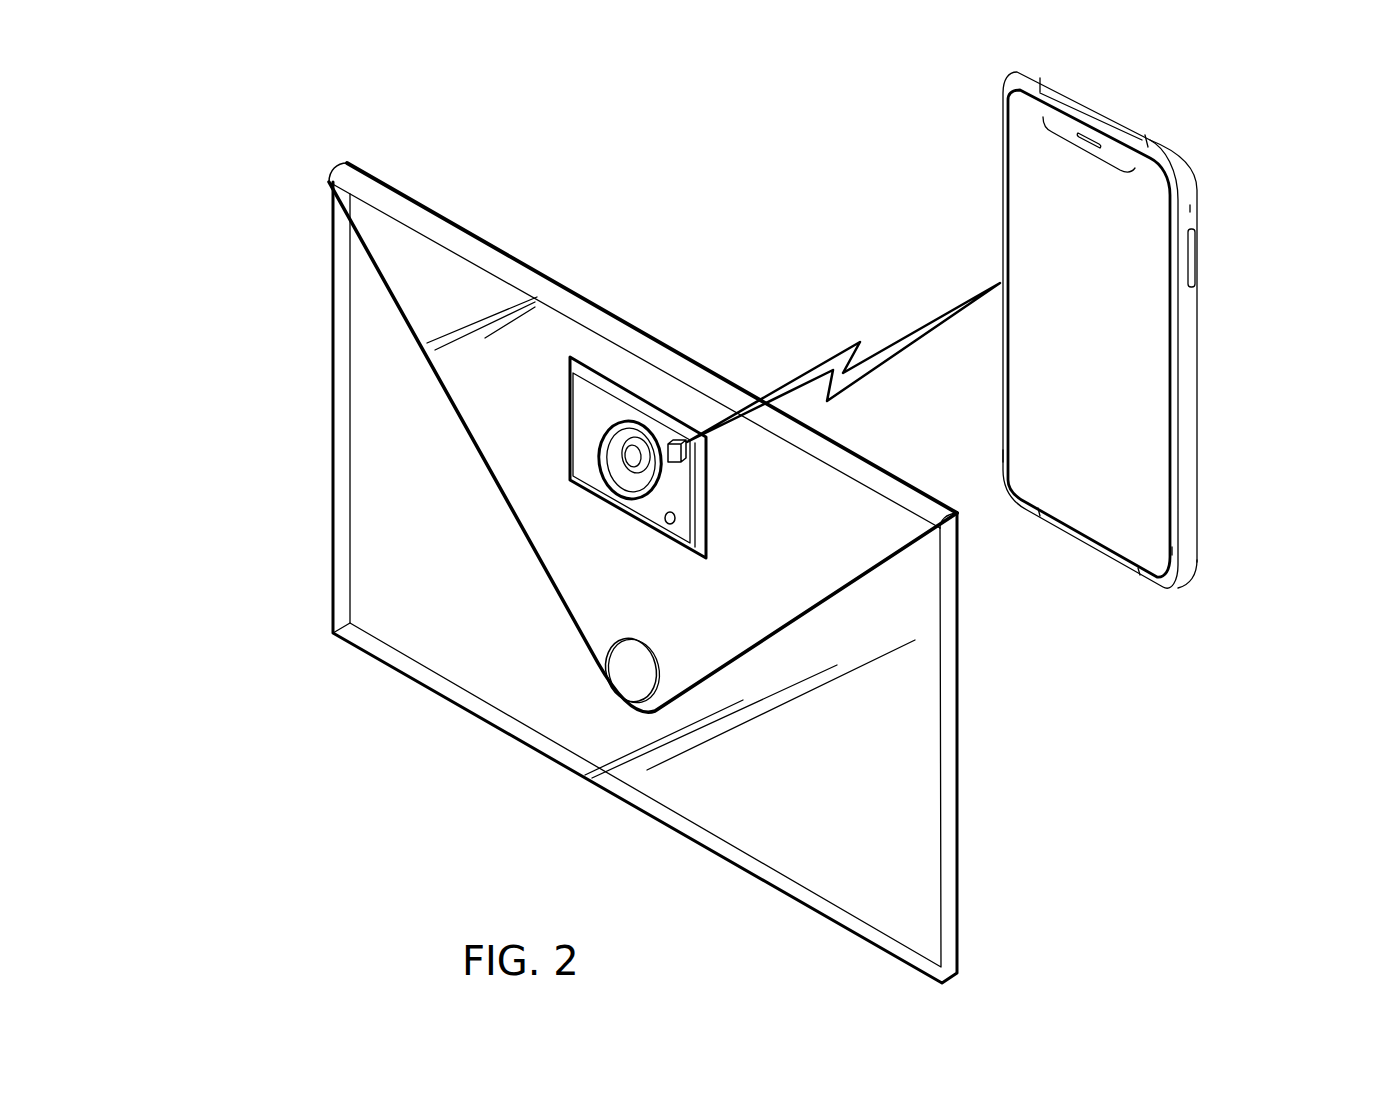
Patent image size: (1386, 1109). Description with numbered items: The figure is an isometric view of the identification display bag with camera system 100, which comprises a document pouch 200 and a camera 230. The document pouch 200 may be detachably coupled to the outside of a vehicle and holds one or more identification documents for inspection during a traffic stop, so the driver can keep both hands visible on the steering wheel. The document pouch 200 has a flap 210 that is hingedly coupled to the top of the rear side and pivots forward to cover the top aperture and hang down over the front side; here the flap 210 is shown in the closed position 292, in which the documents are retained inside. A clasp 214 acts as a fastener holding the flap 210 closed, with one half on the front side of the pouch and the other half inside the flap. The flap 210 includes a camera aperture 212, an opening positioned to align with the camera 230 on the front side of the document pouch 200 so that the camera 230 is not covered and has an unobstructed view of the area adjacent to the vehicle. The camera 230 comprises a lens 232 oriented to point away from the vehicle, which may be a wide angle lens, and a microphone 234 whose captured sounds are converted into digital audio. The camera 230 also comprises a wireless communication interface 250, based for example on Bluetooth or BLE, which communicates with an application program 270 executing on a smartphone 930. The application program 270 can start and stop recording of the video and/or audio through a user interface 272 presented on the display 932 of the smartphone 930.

The identification display bag with camera system 100 is at (218, 163).
The document pouch 200 is at (398, 488).
The flap 210 is at (433, 323).
The camera aperture 212 is at (705, 497).
The clasp 214 is at (630, 673).
The camera 230 is at (590, 397).
The lens 232 is at (625, 453).
The microphone 234 is at (670, 524).
The wireless communication interface 250 is at (674, 444).
The application program 270 is at (1171, 330).
The user interface 272 is at (1113, 247).
The closed position 292 is at (1010, 783).
The smartphone 930 is at (1197, 578).
The display 932 is at (1170, 440).